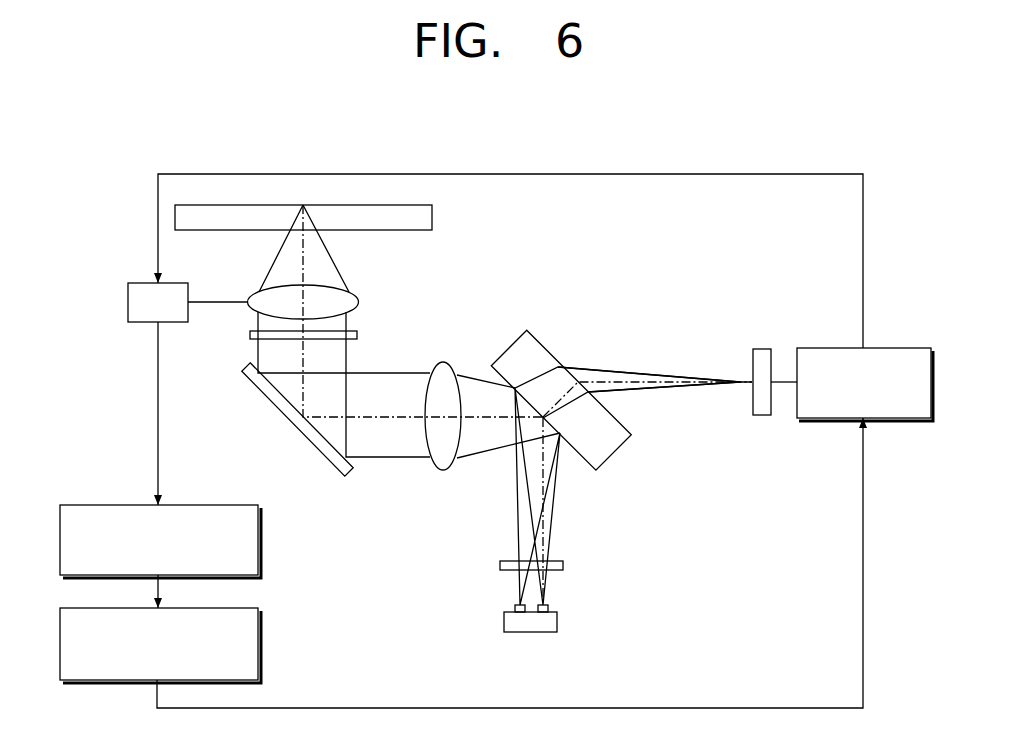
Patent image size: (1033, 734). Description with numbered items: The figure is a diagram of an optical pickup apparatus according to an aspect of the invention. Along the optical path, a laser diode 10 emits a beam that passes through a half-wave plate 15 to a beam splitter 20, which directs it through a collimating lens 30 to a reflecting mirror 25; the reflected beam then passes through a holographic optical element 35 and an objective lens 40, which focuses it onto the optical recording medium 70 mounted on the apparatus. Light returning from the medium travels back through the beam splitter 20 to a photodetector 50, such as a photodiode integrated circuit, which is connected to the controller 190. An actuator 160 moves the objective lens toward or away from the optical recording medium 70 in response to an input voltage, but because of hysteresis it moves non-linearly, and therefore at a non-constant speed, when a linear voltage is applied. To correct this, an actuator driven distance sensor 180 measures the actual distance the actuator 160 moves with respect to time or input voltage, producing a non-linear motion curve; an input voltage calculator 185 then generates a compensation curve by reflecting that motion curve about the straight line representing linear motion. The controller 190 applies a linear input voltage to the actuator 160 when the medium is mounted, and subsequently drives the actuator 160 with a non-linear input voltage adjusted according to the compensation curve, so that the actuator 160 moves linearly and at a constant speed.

The laser diode 10 is at (557, 622).
The half-wave plate 15 is at (563, 566).
The beam splitter 20 is at (537, 345).
The reflecting mirror 25 is at (261, 388).
The collimating lens 30 is at (440, 470).
The holographic optical element 35 is at (357, 334).
The objective lens 40 is at (358, 298).
The photodetector 50 is at (762, 349).
The optical recording medium 70 is at (405, 205).
The actuator 160 is at (128, 300).
The actuator driven distance sensor 180 is at (262, 523).
The input voltage calculator 185 is at (262, 625).
The controller 190 is at (912, 348).